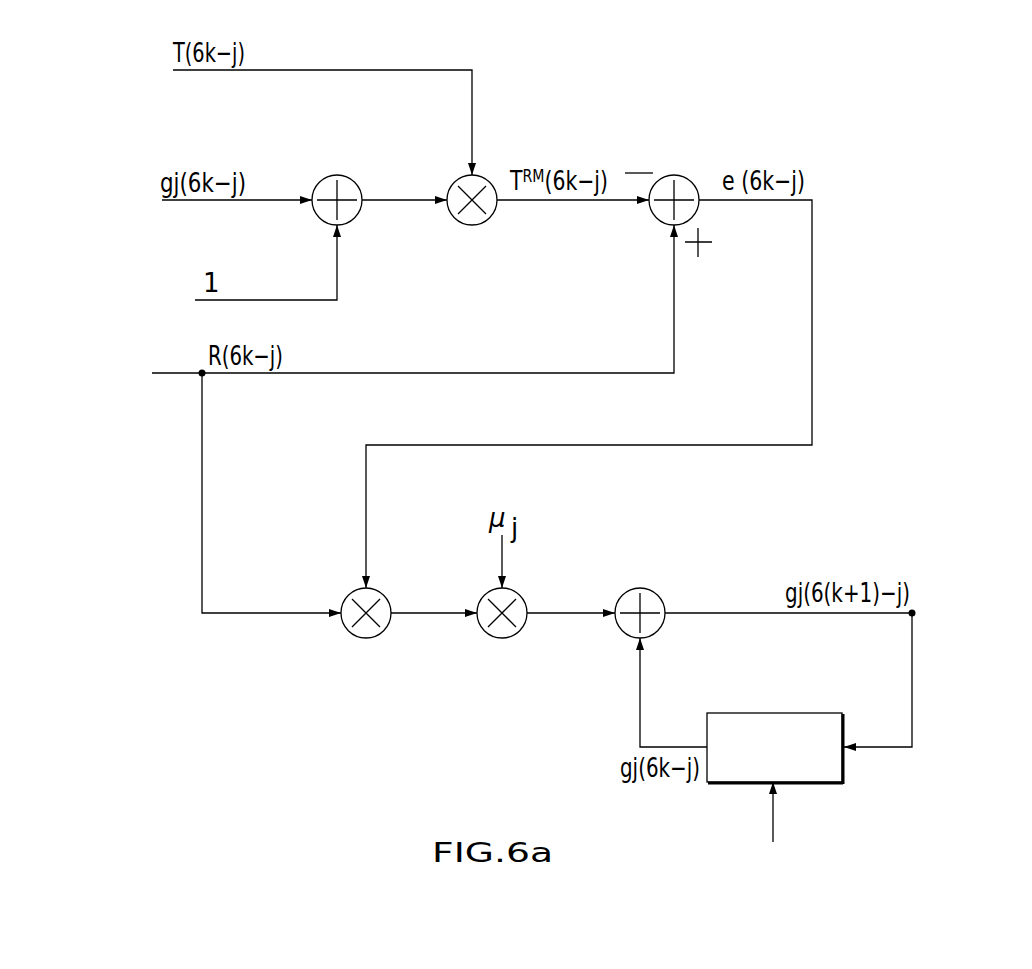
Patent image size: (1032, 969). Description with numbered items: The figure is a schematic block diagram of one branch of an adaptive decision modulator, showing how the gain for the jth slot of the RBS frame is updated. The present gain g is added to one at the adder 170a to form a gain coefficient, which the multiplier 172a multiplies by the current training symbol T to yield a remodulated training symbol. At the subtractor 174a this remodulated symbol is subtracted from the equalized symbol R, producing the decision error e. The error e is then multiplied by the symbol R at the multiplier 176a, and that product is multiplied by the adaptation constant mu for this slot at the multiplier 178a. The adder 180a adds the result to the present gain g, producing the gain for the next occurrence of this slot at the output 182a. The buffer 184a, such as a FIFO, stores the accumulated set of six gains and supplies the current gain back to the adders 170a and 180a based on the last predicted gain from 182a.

The adder 170a is at (325, 178).
The multiplier 172a is at (462, 178).
The subtractor 174a is at (667, 174).
The multiplier 176a is at (362, 639).
The multiplier 178a is at (498, 639).
The adder 180a is at (645, 588).
The next gain output 182a is at (913, 616).
The buffer 184a is at (808, 784).